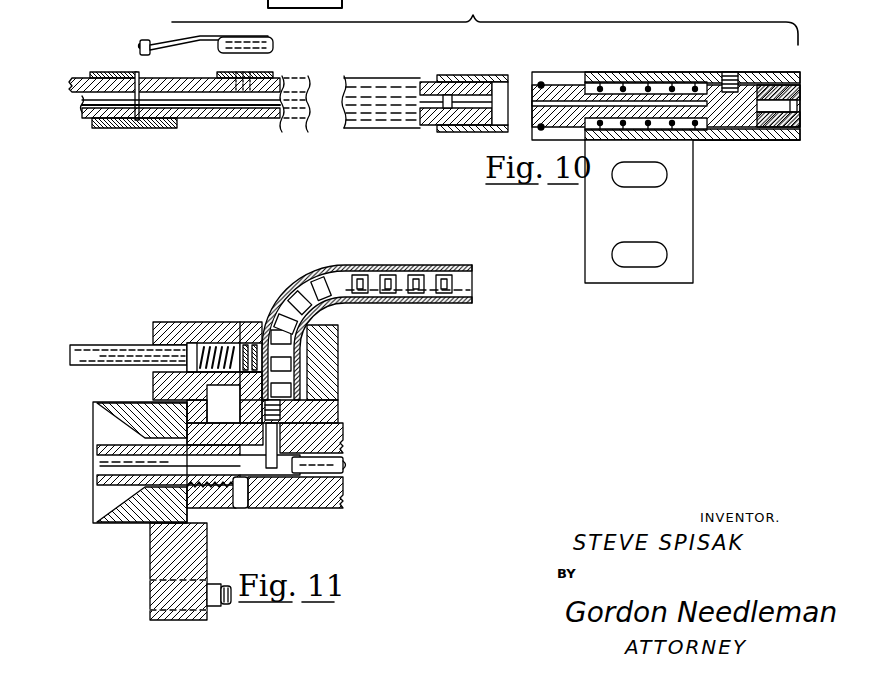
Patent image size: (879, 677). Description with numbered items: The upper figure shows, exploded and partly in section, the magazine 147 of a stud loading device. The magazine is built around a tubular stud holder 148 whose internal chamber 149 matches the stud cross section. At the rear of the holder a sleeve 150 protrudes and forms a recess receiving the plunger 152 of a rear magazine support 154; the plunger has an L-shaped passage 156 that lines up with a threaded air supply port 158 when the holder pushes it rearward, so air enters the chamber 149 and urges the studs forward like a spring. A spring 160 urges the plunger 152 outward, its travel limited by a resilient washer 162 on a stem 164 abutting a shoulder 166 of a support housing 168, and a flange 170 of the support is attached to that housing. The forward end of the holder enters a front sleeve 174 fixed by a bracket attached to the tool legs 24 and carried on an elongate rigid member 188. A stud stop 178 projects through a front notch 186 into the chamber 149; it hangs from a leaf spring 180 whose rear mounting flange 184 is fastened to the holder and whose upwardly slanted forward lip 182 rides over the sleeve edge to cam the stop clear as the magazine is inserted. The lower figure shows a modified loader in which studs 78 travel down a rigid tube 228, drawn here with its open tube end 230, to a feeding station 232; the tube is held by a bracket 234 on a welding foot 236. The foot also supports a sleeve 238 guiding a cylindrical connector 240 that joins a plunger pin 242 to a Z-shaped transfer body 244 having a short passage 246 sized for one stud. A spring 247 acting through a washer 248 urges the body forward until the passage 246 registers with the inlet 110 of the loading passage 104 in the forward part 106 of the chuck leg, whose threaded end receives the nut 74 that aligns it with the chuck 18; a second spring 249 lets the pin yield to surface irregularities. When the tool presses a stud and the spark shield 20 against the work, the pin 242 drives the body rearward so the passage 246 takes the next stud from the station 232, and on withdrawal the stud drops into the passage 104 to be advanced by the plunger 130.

In FIG. 10, the leaf spring 180 is at (172, 22).
In FIG. 10, the forward lip 182 is at (140, 44).
In FIG. 10, the stud stop 178 is at (140, 48).
In FIG. 10, the rear mounting flange 184 is at (271, 45).
In FIG. 10, the front sleeve 174 is at (92, 72).
In FIG. 10, the rigid member 188 is at (82, 76).
In FIG. 10, the front notch 186 is at (146, 82).
In FIG. 10, the tubular stud holder 148 is at (218, 118).
In FIG. 10, the internal chamber 149 is at (214, 105).
In FIG. 10, the magazine 147 is at (402, 45).
In FIG. 10, the sleeve 150 is at (490, 74).
In FIG. 10, the plunger 152 is at (563, 85).
In FIG. 10, the L-shaped passage 156 is at (560, 101).
In FIG. 10, the spring 160 is at (630, 62).
In FIG. 10, the air supply port 158 is at (730, 72).
In FIG. 10, the stem 164 is at (783, 85).
In FIG. 10, the resilient washer 162 is at (800, 105).
In FIG. 10, the shoulder 166 is at (772, 130).
In FIG. 10, the support housing 168 is at (745, 140).
In FIG. 10, the rear magazine support 154 is at (710, 151).
In FIG. 10, the flange 170 is at (693, 218).
In FIG. 11, the cylindrical connector 240 is at (153, 324).
In FIG. 11, the plunger pin 242 is at (80, 344).
In FIG. 11, the second spring 249 is at (210, 344).
In FIG. 11, the Z-shaped transfer body 244 is at (237, 322).
In FIG. 11, the washer 248 is at (247, 323).
In FIG. 11, the spring 247 is at (255, 345).
In FIG. 11, the sleeve 238 is at (153, 377).
In FIG. 11, the chuck 18 is at (108, 436).
In FIG. 11, the spark shield 20 is at (102, 525).
In FIG. 11, the welding foot 236 is at (150, 564).
In FIG. 11, the tool legs 24 is at (226, 589).
In FIG. 11, the nut 74 is at (222, 507).
In FIG. 11, the loading passage 104 is at (240, 508).
In FIG. 11, the forward part 106 is at (302, 514).
In FIG. 11, the inlet 110 is at (280, 436).
In FIG. 11, the plunger 130 is at (304, 458).
In FIG. 11, the short passage 246 is at (283, 411).
In FIG. 11, the bracket 234 is at (338, 332).
In FIG. 11, the rigid tube 228 is at (408, 301).
In FIG. 11, the feeding station 232 is at (300, 385).
In FIG. 11, the studs 78 is at (423, 285).
In FIG. 11, the tube end 230 is at (466, 298).